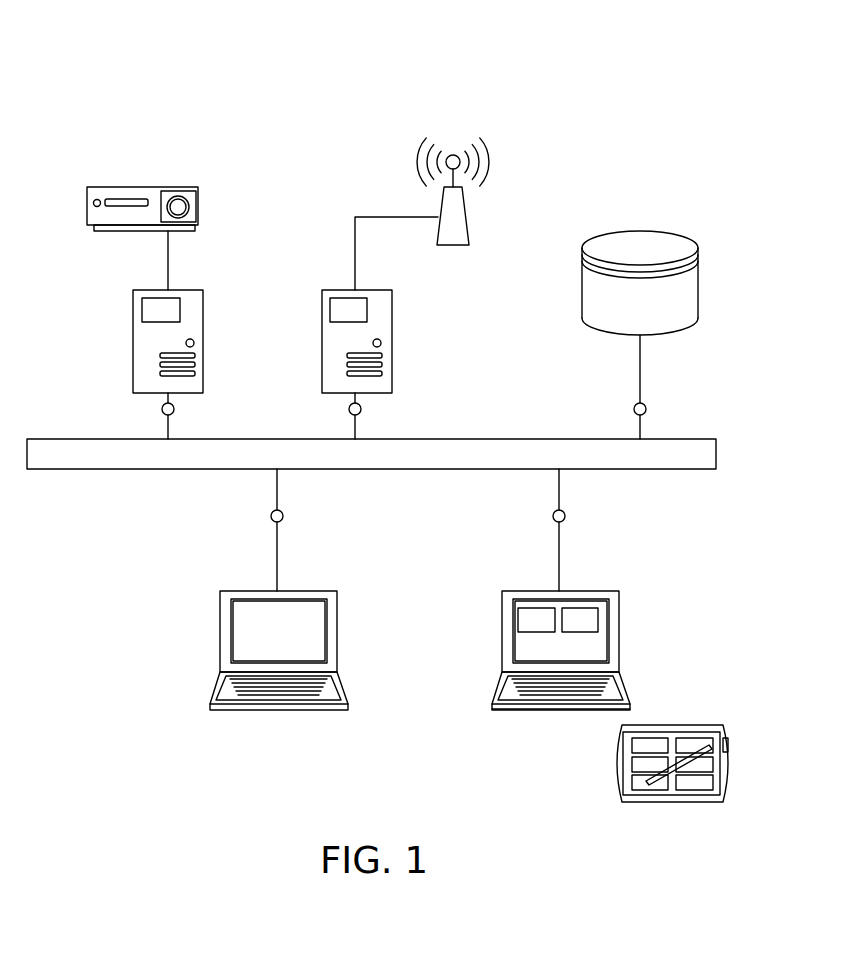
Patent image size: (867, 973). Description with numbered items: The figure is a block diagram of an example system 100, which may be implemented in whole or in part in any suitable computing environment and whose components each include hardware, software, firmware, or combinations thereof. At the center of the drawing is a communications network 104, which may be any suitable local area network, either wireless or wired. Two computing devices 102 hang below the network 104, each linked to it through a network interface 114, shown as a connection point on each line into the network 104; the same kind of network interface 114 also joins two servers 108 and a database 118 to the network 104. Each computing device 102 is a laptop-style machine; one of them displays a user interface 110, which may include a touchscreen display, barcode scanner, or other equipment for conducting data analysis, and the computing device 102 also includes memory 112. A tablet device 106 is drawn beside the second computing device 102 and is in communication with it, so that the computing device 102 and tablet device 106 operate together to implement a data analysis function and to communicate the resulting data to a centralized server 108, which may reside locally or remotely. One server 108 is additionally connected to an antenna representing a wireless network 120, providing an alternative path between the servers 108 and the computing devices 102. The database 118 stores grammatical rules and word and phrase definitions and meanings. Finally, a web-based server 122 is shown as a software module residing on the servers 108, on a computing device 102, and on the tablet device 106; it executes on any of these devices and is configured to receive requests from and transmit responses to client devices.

The system 100 is at (198, 98).
The computing device 102 is at (337, 607).
The communications network 104 is at (300, 439).
The tablet device 106 is at (697, 725).
The server 108 is at (203, 307).
The user interface 110 is at (536, 620).
The memory 112 is at (558, 709).
The network interface 114 is at (170, 397).
The database 118 is at (668, 233).
The wireless network 120 is at (465, 217).
The web-based server 122 is at (732, 777).